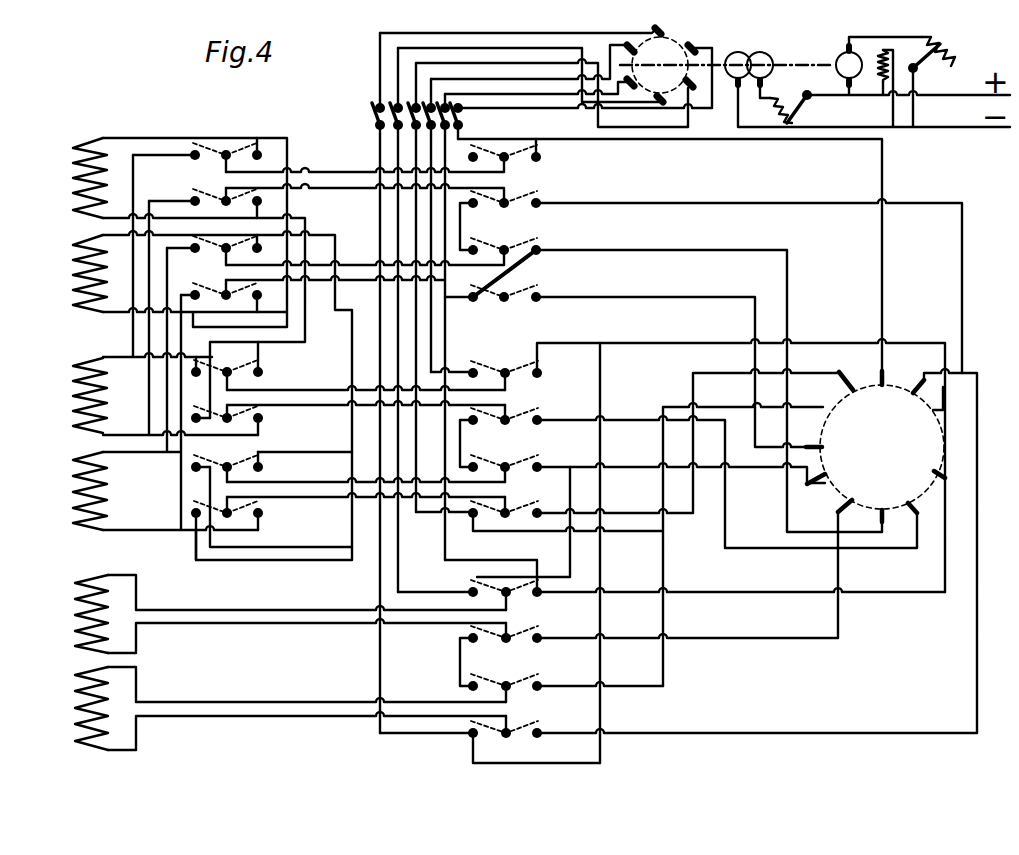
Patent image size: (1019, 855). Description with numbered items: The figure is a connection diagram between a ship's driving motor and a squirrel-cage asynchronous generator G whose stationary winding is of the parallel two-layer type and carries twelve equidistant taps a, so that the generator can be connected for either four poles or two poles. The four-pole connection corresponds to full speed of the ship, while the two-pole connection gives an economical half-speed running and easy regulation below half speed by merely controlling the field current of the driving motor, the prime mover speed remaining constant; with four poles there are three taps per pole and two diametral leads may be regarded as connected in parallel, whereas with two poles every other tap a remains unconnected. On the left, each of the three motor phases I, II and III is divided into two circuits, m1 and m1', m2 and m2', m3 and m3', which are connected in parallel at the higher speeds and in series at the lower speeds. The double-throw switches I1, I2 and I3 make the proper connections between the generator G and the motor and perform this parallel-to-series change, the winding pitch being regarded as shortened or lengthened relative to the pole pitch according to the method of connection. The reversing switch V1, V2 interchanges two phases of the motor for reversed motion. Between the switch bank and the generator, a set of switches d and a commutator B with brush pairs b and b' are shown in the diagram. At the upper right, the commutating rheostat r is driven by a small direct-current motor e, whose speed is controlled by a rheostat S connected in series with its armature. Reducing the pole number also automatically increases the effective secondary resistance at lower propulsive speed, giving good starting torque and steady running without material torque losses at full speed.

The phase I of the driving motor I is at (58, 225).
The phase II of the driving motor II is at (56, 444).
The phase III of the driving motor III is at (57, 662).
The first circuit of phase I m1 is at (71, 178).
The second circuit of phase I m1' is at (71, 273).
The first circuit of phase II m2 is at (71, 395).
The second circuit of phase II m2' is at (71, 491).
The first circuit of phase III m3 is at (73, 614).
The second circuit of phase III m3' is at (74, 708).
The reversing switch V1 is at (197, 212).
The reversing switch V2 is at (240, 451).
The double-throw switch I1 is at (500, 220).
The double-throw switch I2 is at (501, 439).
The double-throw switch I3 is at (501, 659).
The disconnecting switches d is at (402, 115).
The commutator of the regulating machine B is at (661, 57).
The brush pair b is at (738, 59).
The brush pair b' is at (760, 59).
The small direct-current motor e is at (862, 65).
The commutating rheostat r is at (789, 108).
The rheostat S is at (931, 51).
The asynchronous generator G is at (883, 451).
The equidistant taps a is at (883, 451).